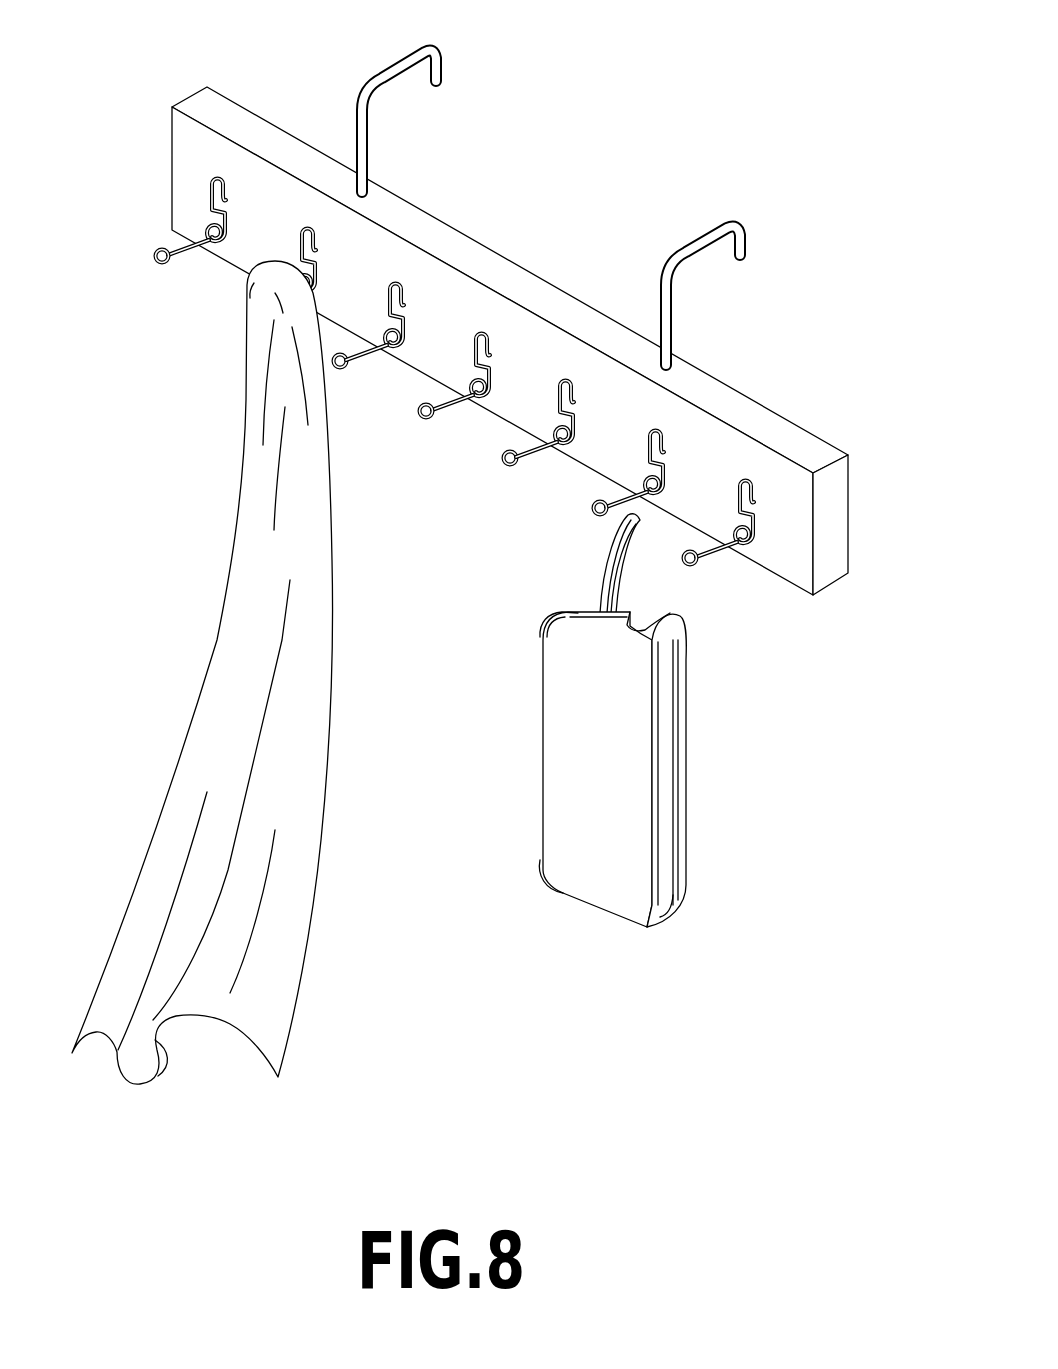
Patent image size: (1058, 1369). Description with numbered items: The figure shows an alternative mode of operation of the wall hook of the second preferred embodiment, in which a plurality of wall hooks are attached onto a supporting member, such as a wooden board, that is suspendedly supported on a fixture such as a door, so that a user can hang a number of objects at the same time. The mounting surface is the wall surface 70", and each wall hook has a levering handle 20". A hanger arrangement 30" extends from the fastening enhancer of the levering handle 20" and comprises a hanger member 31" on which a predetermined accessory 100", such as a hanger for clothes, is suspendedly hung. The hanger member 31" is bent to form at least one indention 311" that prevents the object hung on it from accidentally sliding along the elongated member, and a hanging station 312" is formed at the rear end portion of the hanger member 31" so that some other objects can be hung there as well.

The levering handle 20 is at (225, 167).
The wall surface 70 is at (417, 274).
The hanger arrangement 30 is at (192, 267).
The hanger member 31 is at (367, 353).
The indention 311 is at (538, 440).
The hanging station 312 is at (420, 418).
The accessory 100 is at (613, 758).